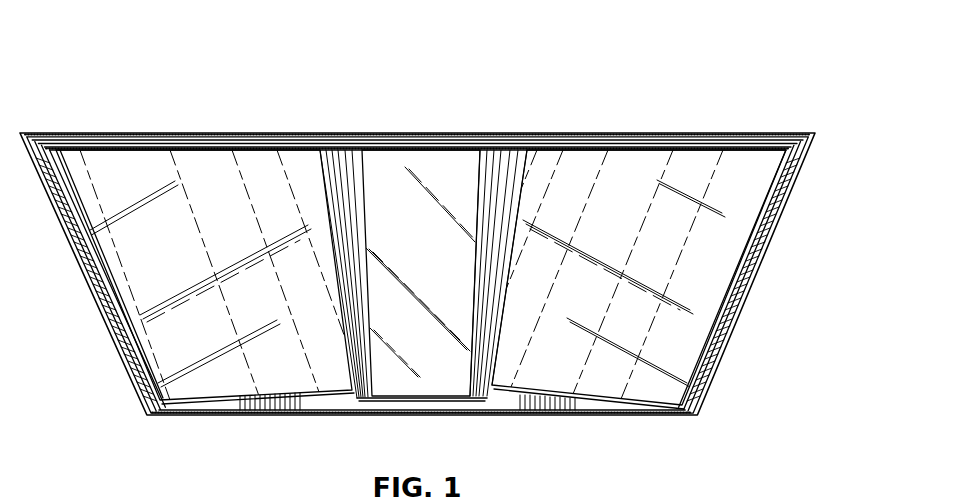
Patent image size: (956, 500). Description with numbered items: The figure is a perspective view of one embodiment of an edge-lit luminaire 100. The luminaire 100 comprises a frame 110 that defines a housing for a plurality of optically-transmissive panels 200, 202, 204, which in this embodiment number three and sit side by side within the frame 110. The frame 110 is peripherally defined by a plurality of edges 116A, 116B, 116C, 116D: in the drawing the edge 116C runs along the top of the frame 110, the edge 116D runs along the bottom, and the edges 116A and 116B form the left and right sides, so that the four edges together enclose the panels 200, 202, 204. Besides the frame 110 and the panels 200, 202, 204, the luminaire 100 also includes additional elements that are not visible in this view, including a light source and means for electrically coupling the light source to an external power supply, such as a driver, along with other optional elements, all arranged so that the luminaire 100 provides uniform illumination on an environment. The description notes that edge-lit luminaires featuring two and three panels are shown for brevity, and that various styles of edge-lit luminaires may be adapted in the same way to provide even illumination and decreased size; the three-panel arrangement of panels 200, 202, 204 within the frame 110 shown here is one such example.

The edge-lit luminaire 100 is at (764, 70).
The frame 110 is at (286, 122).
The edge 116A is at (108, 331).
The edge 116B is at (718, 376).
The edge 116C is at (462, 132).
The edge 116D is at (337, 416).
The optically-transmissive panel 200 is at (178, 262).
The optically-transmissive panel 202 is at (437, 259).
The optically-transmissive panel 204 is at (695, 258).